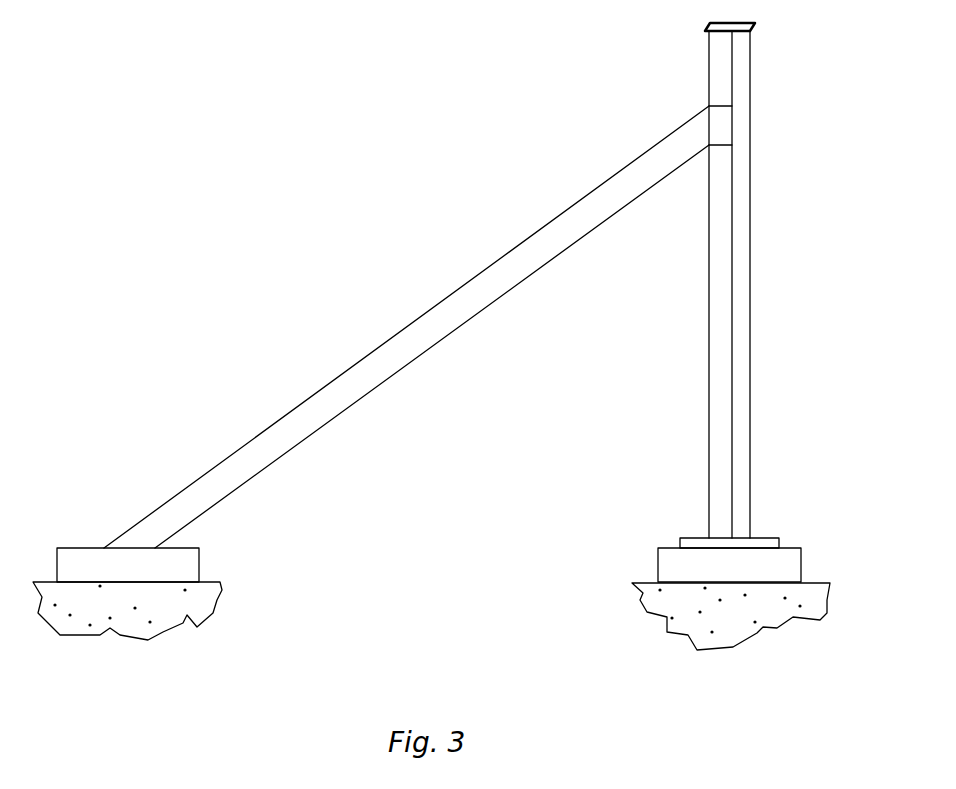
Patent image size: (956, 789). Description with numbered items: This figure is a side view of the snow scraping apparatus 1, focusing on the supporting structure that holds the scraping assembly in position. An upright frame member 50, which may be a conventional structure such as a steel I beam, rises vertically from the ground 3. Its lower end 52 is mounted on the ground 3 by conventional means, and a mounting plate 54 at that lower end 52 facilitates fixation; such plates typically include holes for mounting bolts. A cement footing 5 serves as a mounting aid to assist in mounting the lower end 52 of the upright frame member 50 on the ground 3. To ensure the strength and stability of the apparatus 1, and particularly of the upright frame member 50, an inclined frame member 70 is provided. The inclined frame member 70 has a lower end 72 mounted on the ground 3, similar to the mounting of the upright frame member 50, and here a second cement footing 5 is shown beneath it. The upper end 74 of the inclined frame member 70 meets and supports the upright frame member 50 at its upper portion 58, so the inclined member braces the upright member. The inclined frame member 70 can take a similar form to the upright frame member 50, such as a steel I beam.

The snow scraping apparatus 1 is at (310, 166).
The ground 3 is at (205, 585).
The cement footing 5 is at (128, 558).
The upright frame member 50 is at (760, 265).
The lower end of frame member 52 is at (740, 520).
The mounting plate 54 is at (712, 542).
The upper portion of upright frame member 58 is at (746, 156).
The inclined frame member 70 is at (392, 356).
The lower end of inclined frame member 72 is at (175, 520).
The upper end of inclined frame member 74 is at (690, 137).